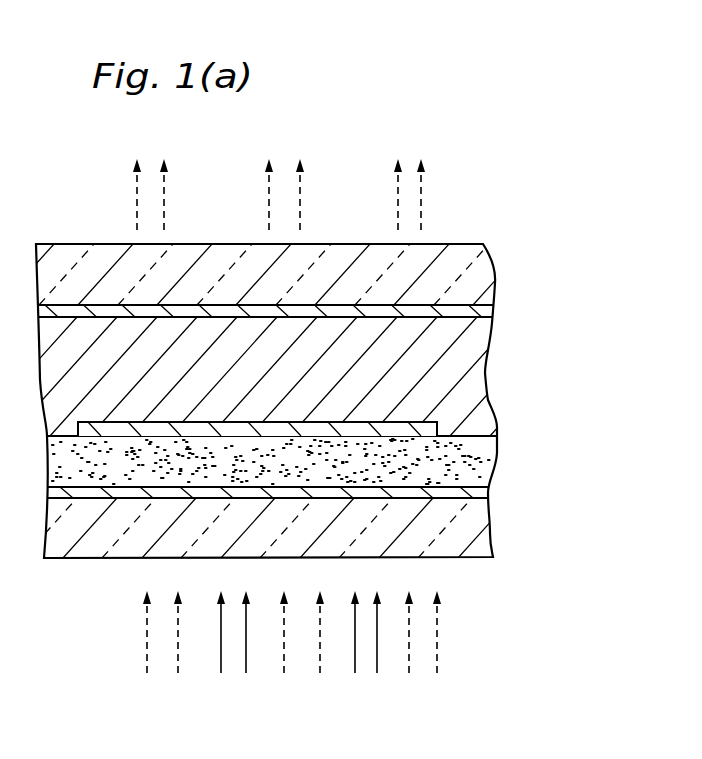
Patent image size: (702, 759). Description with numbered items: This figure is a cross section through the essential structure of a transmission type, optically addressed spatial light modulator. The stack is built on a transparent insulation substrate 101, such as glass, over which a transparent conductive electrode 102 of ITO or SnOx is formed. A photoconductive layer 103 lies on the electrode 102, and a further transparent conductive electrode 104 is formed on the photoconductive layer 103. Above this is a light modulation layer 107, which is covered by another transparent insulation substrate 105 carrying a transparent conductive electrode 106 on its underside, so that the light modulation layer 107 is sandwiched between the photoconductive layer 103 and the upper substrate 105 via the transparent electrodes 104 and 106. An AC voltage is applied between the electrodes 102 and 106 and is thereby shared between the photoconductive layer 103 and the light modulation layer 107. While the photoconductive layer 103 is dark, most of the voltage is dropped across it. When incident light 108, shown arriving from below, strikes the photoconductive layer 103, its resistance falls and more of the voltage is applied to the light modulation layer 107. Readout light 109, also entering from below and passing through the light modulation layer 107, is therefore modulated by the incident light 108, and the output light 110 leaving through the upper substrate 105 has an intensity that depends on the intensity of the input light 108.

The transparent insulation substrate 101 is at (472, 535).
The transparent conductive electrode 102 is at (487, 488).
The photoconductive layer 103 is at (472, 463).
The transparent conductive electrode 104 is at (440, 424).
The transparent insulation substrate 105 is at (488, 262).
The transparent conductive electrode 106 is at (490, 308).
The light modulation layer 107 is at (460, 355).
The incident light 108 is at (377, 657).
The readout light 109 is at (437, 660).
The output light 110 is at (423, 206).